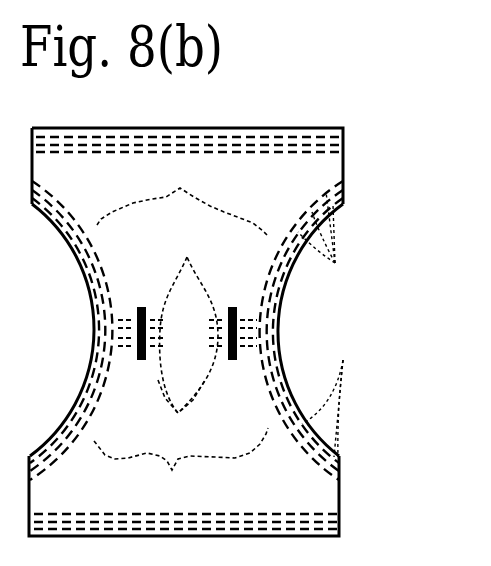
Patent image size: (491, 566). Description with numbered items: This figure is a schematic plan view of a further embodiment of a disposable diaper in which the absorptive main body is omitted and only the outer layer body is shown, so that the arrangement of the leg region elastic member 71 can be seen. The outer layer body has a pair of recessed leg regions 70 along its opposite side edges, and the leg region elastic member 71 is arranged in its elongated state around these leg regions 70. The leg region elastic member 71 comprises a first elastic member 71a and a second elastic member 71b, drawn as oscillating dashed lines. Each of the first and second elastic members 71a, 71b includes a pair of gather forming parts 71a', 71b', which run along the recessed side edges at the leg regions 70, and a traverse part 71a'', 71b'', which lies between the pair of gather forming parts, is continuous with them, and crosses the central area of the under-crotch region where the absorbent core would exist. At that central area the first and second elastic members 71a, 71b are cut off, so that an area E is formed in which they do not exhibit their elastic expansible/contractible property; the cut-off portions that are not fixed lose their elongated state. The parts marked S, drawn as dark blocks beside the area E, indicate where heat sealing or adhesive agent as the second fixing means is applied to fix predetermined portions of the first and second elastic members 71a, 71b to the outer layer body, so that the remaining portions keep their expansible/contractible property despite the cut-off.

The leg region 70 is at (108, 333).
The leg region elastic member 71 is at (226, 331).
The first elastic member 71a is at (245, 282).
The second elastic member 71b is at (243, 412).
The gather forming part 71a' is at (182, 193).
The traverse part 71a'' is at (195, 316).
The gather forming part 71b' is at (181, 469).
The traverse part 71b'' is at (190, 415).
The fixing part S is at (130, 300).
The non-elastic area E is at (198, 347).